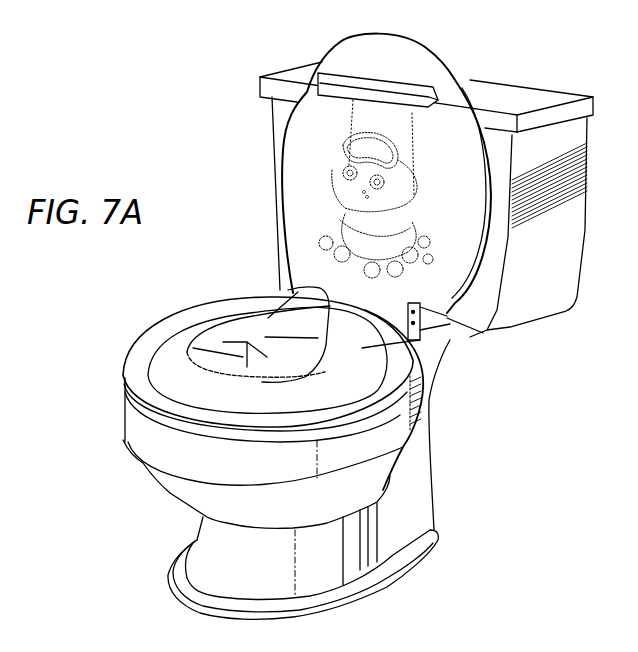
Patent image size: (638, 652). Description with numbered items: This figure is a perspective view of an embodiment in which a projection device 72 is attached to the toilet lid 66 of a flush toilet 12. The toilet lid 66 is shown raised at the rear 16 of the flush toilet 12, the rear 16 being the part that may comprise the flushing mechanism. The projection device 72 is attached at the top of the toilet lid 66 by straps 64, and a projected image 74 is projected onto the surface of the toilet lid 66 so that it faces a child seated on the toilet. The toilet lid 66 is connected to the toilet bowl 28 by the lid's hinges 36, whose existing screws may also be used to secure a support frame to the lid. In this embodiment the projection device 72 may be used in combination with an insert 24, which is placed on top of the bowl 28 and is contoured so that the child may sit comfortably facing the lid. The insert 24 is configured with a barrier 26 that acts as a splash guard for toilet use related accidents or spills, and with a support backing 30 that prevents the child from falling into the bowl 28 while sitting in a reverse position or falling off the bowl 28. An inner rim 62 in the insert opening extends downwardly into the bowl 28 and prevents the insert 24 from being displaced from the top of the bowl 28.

The flush toilet 12 is at (425, 478).
The rear 16 is at (450, 353).
The insert 24 is at (443, 366).
The barrier 26 is at (308, 320).
The toilet bowl 28 is at (177, 490).
The support backing 30 is at (187, 370).
The lid's hinges 36 is at (438, 321).
The inner rim 62 is at (253, 363).
The straps 64 is at (452, 98).
The toilet lid 66 is at (283, 188).
The projection device 72 is at (342, 80).
The projected image 74 is at (325, 183).